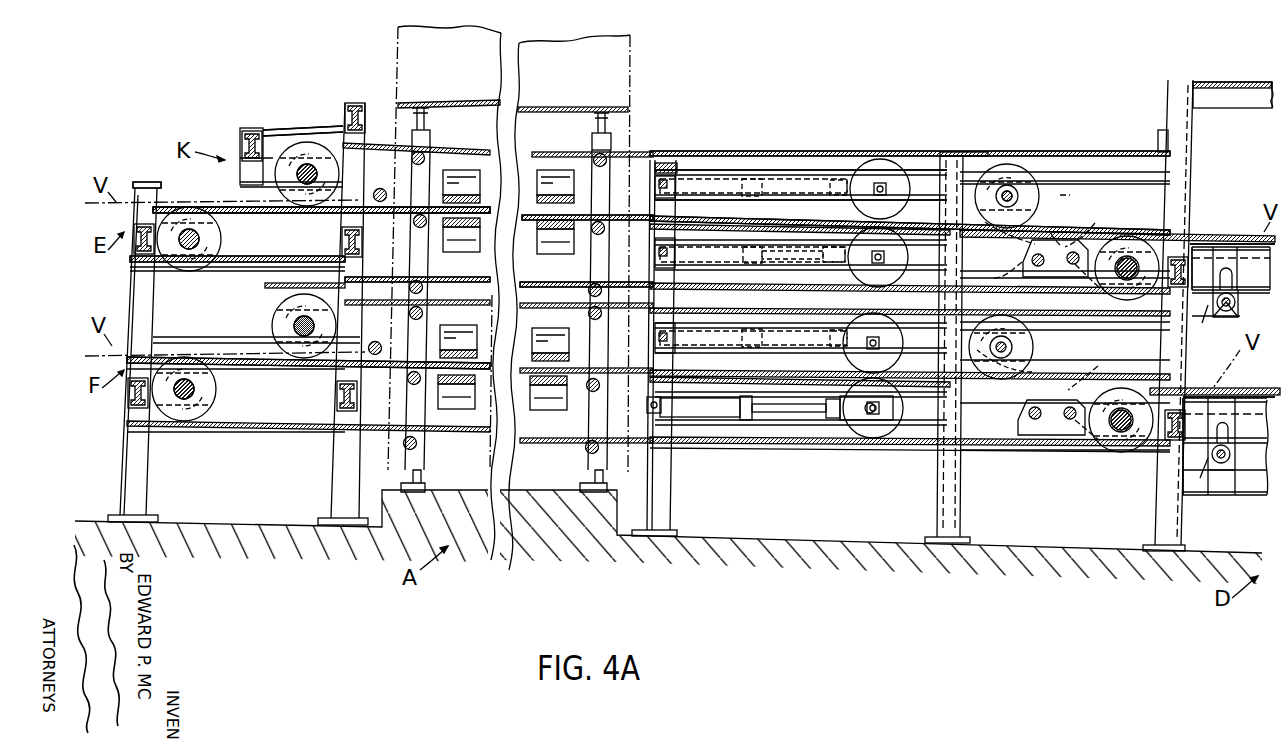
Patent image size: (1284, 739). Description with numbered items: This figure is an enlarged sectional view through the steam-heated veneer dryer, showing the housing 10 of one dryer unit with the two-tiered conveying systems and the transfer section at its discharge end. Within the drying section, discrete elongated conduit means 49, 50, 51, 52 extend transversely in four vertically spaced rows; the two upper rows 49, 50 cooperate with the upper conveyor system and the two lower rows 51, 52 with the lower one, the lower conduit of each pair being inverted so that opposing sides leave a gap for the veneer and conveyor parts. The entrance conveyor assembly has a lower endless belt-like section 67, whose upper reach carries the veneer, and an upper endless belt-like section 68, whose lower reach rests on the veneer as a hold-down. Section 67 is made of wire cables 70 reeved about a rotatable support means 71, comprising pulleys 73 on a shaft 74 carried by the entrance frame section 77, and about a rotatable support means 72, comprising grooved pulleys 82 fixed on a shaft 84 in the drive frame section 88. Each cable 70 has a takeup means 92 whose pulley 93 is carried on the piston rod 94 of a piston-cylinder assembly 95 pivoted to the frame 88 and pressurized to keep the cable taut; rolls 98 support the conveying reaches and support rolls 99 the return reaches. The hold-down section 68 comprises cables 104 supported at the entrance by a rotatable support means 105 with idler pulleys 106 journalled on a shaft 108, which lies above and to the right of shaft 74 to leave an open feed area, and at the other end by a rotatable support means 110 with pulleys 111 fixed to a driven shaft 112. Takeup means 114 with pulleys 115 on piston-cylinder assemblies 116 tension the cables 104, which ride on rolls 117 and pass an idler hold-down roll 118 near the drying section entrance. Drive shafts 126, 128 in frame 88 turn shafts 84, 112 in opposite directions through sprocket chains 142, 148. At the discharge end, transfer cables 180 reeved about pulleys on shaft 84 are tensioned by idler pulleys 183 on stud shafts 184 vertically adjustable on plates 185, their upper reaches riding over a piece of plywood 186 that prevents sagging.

The housing 10 is at (634, 140).
The conduit means 49 is at (492, 172).
The conduit means 50 is at (464, 250).
The conduit means 51 is at (458, 328).
The conduit means 52 is at (466, 415).
The lower endless belt-like section 67 is at (318, 218).
The upper endless belt-like section 68 is at (666, 144).
The wire cables 70 is at (292, 263).
The rotatable support means 71 is at (172, 275).
The rotatable support means 72 is at (1133, 236).
The pulleys 73 is at (196, 269).
The shaft 74 is at (201, 230).
The entrance frame section 77 is at (244, 128).
The pulleys 82 is at (1136, 301).
The shaft 84 is at (1145, 246).
The drive frame section 88 is at (942, 148).
The takeup means 92 is at (767, 270).
The pulley 93 is at (882, 286).
The piston rod 94 is at (826, 270).
The piston-cylinder assembly 95 is at (706, 278).
The rolls 98 is at (414, 224).
The support rolls 99 is at (423, 287).
The cables 104 is at (376, 148).
The rotatable support means 105 is at (322, 128).
The idler pulleys 106 is at (286, 170).
The shaft 108 is at (318, 170).
The rotatable support means 110 is at (1030, 161).
The pulleys 111 is at (1038, 169).
The driven shaft 112 is at (1020, 196).
The takeup means 114 is at (765, 160).
The pulleys 115 is at (881, 162).
The piston-cylinder assemblies 116 is at (718, 170).
The rolls 117 is at (426, 162).
The idler hold-down roll 118 is at (392, 194).
The drive shaft 126 is at (1034, 260).
The shaft 128 is at (1086, 243).
The sprocket chain 142 is at (1069, 296).
The sprocket chain 148 is at (1072, 223).
The cables 180 is at (1218, 232).
The idler pulleys 183 is at (1240, 304).
The stud shafts 184 is at (1209, 324).
The plates 185 is at (1231, 278).
The piece of plywood 186 is at (1224, 238).